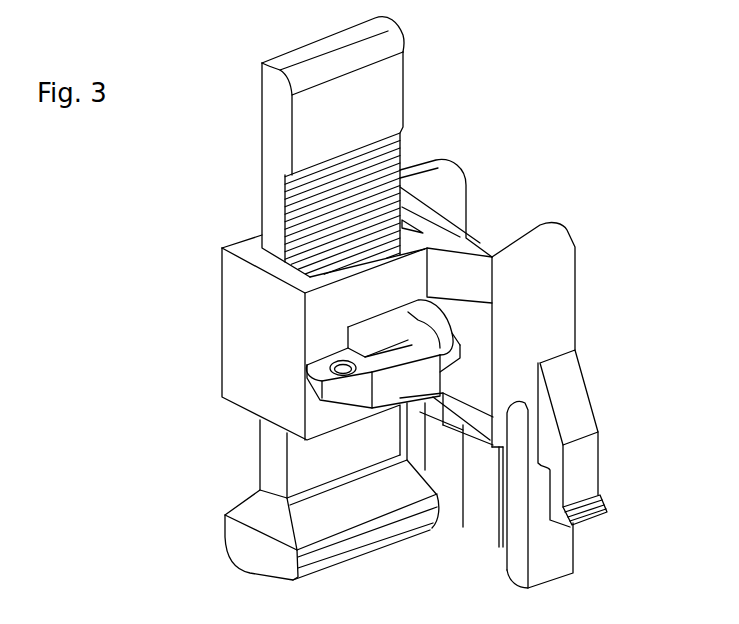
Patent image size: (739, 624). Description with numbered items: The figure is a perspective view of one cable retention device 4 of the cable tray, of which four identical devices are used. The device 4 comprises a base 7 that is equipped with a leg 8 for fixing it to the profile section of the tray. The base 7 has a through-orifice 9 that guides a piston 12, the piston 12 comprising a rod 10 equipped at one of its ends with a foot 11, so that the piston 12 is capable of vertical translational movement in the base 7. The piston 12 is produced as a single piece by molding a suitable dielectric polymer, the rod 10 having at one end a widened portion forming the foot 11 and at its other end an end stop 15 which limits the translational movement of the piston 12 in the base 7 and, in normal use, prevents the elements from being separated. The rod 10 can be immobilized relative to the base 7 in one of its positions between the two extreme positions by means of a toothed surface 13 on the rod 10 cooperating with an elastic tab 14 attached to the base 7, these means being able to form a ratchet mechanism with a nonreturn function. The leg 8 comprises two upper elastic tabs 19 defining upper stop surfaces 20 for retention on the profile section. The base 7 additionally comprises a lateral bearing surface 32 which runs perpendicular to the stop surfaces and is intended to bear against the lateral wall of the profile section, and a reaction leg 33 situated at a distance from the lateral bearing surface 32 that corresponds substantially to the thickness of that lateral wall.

The cable retention device 4 is at (548, 123).
The base 7 is at (232, 312).
The leg 8 is at (553, 308).
The through-orifice 9 is at (407, 232).
The rod 10 is at (275, 224).
The foot 11 is at (272, 520).
The piston 12 is at (228, 425).
The toothed surface 13 is at (403, 158).
The elastic tab 14 is at (408, 378).
The end stop 15 is at (393, 72).
The upper elastic tabs 19 is at (573, 412).
The upper stop surfaces 20 is at (587, 523).
The lateral bearing surface 32 is at (512, 462).
The reaction leg 33 is at (498, 440).